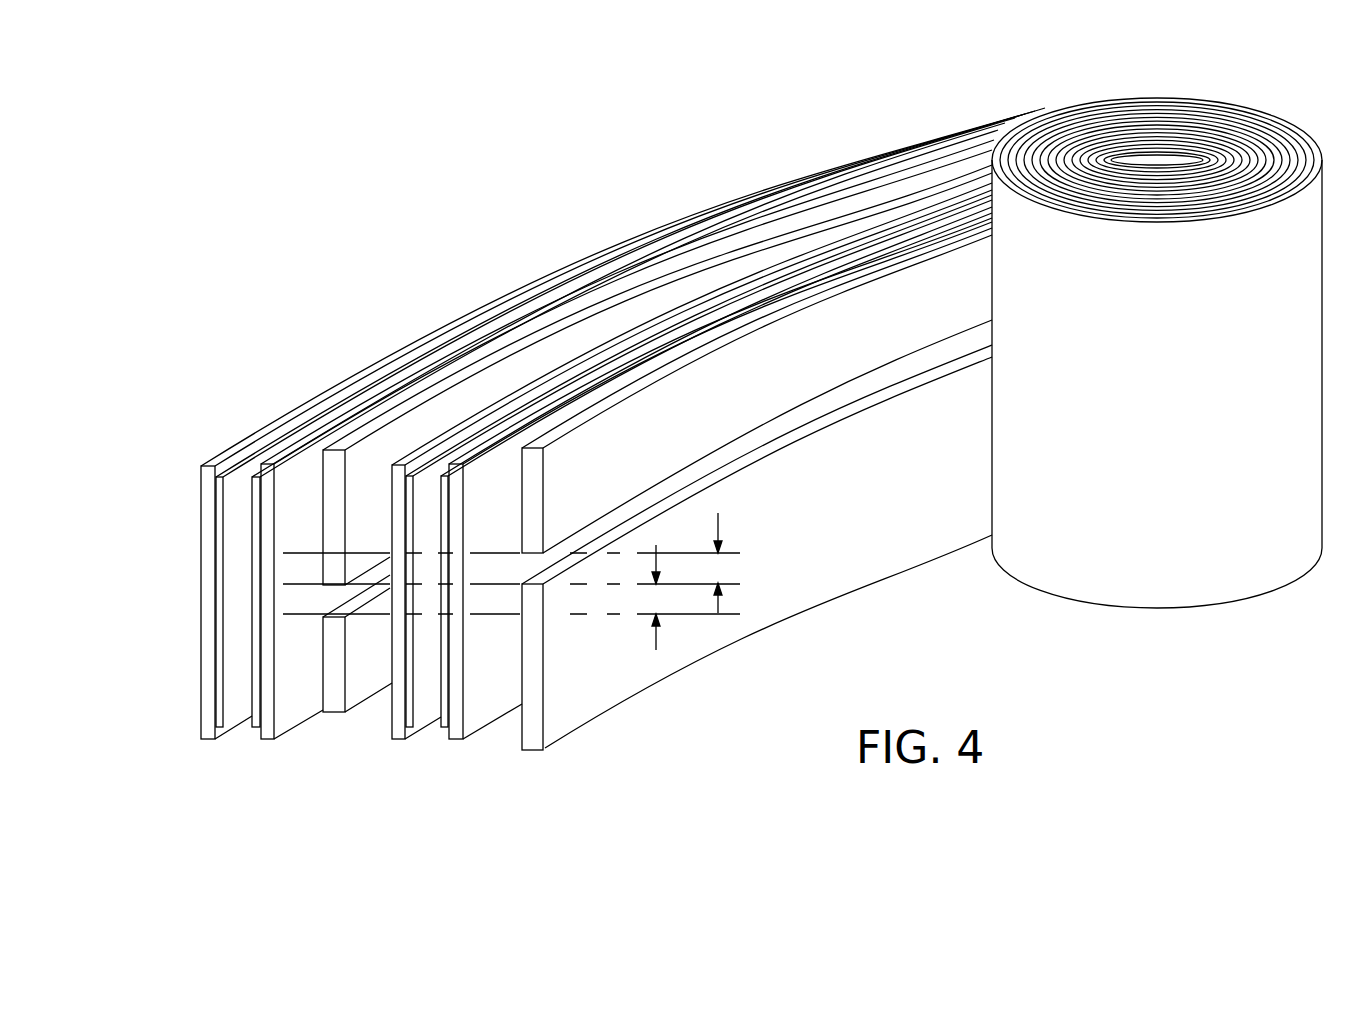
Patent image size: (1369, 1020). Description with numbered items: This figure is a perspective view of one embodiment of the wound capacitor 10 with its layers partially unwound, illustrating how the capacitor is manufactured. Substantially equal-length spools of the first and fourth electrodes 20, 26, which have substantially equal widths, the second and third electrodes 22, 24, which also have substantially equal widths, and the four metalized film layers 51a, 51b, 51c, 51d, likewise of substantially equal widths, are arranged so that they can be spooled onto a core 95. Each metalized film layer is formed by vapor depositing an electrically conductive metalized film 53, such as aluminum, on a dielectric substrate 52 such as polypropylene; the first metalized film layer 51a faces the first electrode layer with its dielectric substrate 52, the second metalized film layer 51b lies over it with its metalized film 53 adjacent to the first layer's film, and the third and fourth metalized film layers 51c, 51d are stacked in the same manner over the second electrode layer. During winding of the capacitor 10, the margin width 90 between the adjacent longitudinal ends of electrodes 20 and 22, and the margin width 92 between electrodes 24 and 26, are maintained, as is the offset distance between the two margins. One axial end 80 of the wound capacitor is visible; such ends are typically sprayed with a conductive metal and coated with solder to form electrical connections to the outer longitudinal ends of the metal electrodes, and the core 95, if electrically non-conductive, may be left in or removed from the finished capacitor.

The wound capacitor 10 is at (477, 195).
The first metal electrode 20 is at (818, 490).
The second metal electrode 22 is at (763, 362).
The third electrode 24 is at (362, 653).
The fourth electrode 26 is at (392, 440).
The first metalized film layer 51a is at (442, 827).
The second metalized film layer 51b is at (390, 827).
The third metalized film layer 51c is at (252, 827).
The fourth metalized film layer 51d is at (200, 827).
The dielectric substrate 52 is at (213, 465).
The metalized film 53 is at (268, 442).
The axial end 80 is at (1143, 118).
The width of the first margin 90 is at (720, 523).
The width of the second margin 92 is at (655, 648).
The core 95 is at (1160, 158).